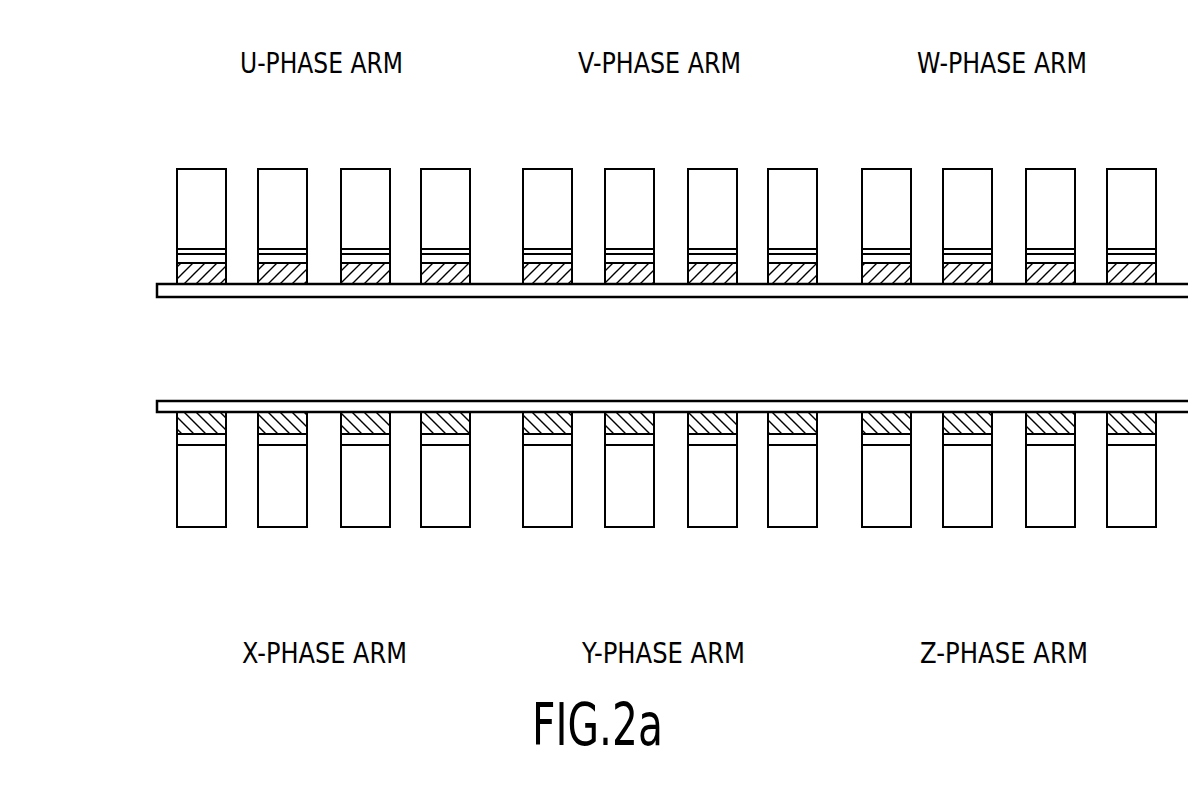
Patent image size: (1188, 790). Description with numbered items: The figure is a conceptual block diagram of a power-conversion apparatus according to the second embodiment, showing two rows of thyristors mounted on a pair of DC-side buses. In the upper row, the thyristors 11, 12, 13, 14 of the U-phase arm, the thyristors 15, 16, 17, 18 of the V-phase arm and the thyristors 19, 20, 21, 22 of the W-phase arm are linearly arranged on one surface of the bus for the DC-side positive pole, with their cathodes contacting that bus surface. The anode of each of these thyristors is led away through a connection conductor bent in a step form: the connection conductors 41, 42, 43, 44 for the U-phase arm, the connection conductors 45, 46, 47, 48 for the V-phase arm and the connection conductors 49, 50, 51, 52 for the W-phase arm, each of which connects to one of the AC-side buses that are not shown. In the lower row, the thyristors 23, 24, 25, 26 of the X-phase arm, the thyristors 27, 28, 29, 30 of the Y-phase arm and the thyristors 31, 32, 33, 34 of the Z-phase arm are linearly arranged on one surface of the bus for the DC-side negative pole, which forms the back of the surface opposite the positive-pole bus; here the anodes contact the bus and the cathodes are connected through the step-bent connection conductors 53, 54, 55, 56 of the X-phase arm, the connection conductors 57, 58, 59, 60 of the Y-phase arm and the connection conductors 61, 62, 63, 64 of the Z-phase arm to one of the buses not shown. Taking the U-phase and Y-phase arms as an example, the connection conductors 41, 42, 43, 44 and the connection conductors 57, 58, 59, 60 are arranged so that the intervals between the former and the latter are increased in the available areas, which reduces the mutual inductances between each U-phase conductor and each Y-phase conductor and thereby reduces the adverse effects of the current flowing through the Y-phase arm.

The thyristor 11 is at (200, 277).
The thyristor 12 is at (281, 277).
The thyristor 13 is at (364, 277).
The thyristor 14 is at (444, 277).
The thyristor 15 is at (546, 277).
The thyristor 16 is at (628, 277).
The thyristor 17 is at (711, 277).
The thyristor 18 is at (791, 277).
The thyristor 19 is at (885, 277).
The thyristor 20 is at (966, 277).
The thyristor 21 is at (1049, 277).
The thyristor 22 is at (1130, 277).
The thyristor 23 is at (200, 417).
The thyristor 24 is at (281, 417).
The thyristor 25 is at (364, 417).
The thyristor 26 is at (444, 417).
The thyristor 27 is at (546, 417).
The thyristor 28 is at (628, 417).
The thyristor 29 is at (711, 417).
The thyristor 30 is at (791, 417).
The thyristor 31 is at (885, 417).
The thyristor 32 is at (966, 417).
The thyristor 33 is at (1049, 417).
The thyristor 34 is at (1130, 417).
The connection conductor 41 is at (201, 226).
The connection conductor 42 is at (282, 226).
The connection conductor 43 is at (365, 226).
The connection conductor 44 is at (445, 226).
The connection conductor 45 is at (547, 226).
The connection conductor 46 is at (629, 226).
The connection conductor 47 is at (712, 226).
The connection conductor 48 is at (792, 226).
The connection conductor 49 is at (886, 226).
The connection conductor 50 is at (967, 226).
The connection conductor 51 is at (1050, 226).
The connection conductor 52 is at (1131, 226).
The connection conductor 53 is at (201, 470).
The connection conductor 54 is at (282, 470).
The connection conductor 55 is at (365, 470).
The connection conductor 56 is at (445, 470).
The connection conductor 57 is at (547, 470).
The connection conductor 58 is at (629, 470).
The connection conductor 59 is at (712, 470).
The connection conductor 60 is at (792, 470).
The connection conductor 61 is at (886, 470).
The connection conductor 62 is at (967, 470).
The connection conductor 63 is at (1050, 470).
The connection conductor 64 is at (1131, 470).